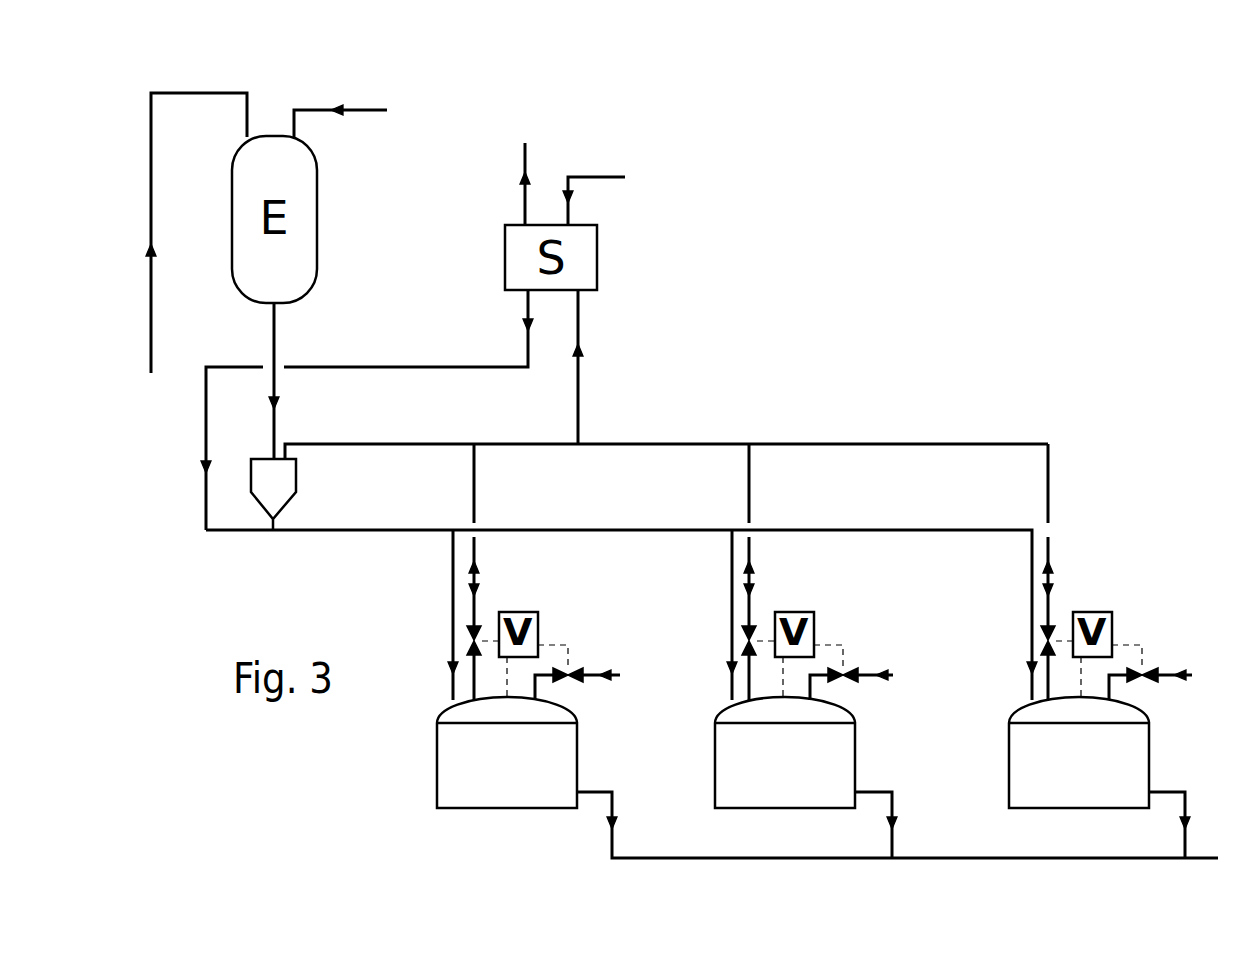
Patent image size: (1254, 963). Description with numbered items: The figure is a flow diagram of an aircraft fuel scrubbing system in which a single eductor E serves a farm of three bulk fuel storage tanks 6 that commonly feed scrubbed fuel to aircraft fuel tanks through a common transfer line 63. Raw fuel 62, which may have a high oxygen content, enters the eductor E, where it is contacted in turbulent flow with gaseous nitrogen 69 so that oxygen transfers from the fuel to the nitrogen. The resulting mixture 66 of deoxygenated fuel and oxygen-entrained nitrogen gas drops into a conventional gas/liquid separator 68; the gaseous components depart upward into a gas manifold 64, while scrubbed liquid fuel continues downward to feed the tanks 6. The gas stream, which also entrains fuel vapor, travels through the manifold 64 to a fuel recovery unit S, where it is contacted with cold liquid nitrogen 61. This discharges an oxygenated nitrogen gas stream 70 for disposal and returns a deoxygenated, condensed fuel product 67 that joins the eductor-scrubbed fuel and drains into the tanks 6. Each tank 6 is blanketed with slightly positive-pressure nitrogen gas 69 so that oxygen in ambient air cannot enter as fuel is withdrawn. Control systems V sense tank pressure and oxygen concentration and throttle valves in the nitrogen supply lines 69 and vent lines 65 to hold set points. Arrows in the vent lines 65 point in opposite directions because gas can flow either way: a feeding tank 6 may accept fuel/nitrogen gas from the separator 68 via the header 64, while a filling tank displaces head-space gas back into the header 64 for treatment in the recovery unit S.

The bulk fuel storage tank 6 is at (1008, 765).
The cold liquid nitrogen 61 is at (590, 178).
The raw fuel 62 is at (175, 92).
The common transfer line 63 is at (990, 857).
The gas manifold 64 is at (720, 442).
The vent line 65 is at (476, 462).
The mixture of deoxygenated fuel and oxygen-entrained nitrogen gas 66 is at (277, 353).
The condensed fuel product 67 is at (390, 367).
The gas/liquid separator 68 is at (250, 463).
The gaseous nitrogen 69 is at (312, 112).
The oxygenated nitrogen gas stream 70 is at (527, 162).